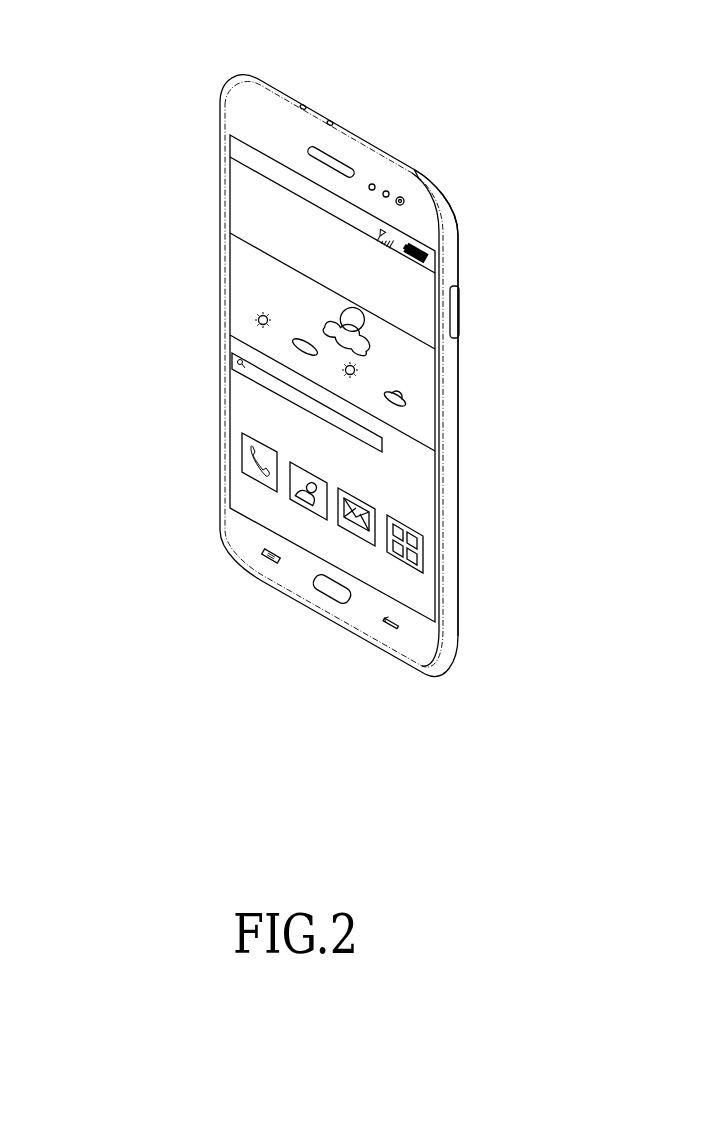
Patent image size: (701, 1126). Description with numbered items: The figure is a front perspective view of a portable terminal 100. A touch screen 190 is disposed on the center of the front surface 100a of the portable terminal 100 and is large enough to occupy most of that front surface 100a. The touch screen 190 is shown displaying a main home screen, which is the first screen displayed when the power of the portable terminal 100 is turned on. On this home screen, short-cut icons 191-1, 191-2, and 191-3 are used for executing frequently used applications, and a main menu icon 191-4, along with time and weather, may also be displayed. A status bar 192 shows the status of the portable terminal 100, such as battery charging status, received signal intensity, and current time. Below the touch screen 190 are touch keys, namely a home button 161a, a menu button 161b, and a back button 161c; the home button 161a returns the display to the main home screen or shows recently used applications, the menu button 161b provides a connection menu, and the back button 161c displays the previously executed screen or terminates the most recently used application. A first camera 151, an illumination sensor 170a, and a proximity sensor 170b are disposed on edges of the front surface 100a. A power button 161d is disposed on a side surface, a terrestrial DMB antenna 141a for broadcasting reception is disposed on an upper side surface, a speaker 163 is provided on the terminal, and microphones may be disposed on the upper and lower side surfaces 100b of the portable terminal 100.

The portable terminal 100 is at (194, 50).
The front surface 100a is at (237, 115).
The side surface 100b is at (452, 417).
The terrestrial DMB antenna 141a is at (442, 195).
The first camera 151 is at (400, 197).
The home button 161a is at (335, 589).
The menu button 161b is at (263, 553).
The back button 161c is at (388, 630).
The power button 161d is at (462, 314).
The speaker 163 is at (308, 148).
The illumination sensor 170a is at (372, 183).
The proximity sensor 170b is at (387, 190).
The touch screen 190 is at (245, 328).
The short-cut icon 191-1 is at (258, 446).
The short-cut icon 191-2 is at (322, 480).
The short-cut icon 191-3 is at (362, 496).
The main menu icon 191-4 is at (407, 524).
The status bar 192 is at (237, 153).